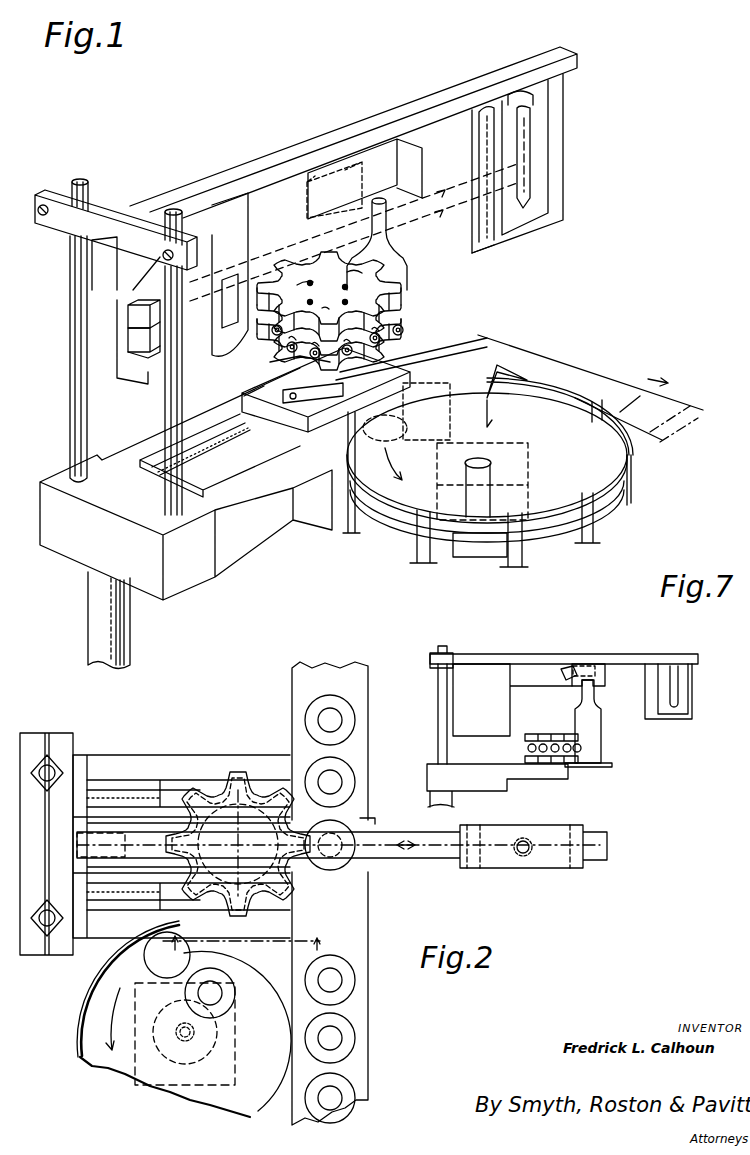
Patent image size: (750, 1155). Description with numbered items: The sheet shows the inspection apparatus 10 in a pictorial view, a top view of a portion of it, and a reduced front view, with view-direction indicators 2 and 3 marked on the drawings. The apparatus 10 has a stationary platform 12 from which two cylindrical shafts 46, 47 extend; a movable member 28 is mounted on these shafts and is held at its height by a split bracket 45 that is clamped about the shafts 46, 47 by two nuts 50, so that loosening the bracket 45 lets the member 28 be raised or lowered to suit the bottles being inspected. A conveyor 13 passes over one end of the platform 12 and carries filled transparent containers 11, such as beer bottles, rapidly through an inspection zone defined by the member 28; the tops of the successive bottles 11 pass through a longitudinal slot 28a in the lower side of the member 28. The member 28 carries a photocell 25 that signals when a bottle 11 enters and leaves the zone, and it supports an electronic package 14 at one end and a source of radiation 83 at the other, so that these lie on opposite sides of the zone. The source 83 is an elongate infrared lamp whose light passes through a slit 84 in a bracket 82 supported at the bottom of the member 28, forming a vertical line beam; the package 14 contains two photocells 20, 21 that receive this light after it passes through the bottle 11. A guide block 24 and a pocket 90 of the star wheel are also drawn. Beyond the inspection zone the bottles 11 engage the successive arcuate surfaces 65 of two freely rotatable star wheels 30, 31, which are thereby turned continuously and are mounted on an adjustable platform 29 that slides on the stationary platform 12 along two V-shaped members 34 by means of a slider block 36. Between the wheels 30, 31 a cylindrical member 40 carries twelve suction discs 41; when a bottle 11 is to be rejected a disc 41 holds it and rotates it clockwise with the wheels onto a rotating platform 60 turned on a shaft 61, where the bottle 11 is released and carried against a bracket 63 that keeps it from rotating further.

In FIG. 1, the inspection apparatus 10 is at (488, 44).
In FIG. 7, the inspection apparatus 10 is at (631, 655).
In FIG. 2, the inspection apparatus 10 is at (272, 709).
In FIG. 1, the transparent containers 11 is at (405, 246).
In FIG. 7, the transparent containers 11 is at (602, 746).
In FIG. 2, the transparent containers 11 is at (352, 768).
In FIG. 1, the stationary platform 12 is at (57, 515).
In FIG. 7, the stationary platform 12 is at (448, 788).
In FIG. 1, the conveyor 13 is at (656, 400).
In FIG. 7, the conveyor 13 is at (610, 766).
In FIG. 2, the conveyor 13 is at (368, 1006).
In FIG. 1, the electronic package 14 is at (125, 384).
In FIG. 7, the electronic package 14 is at (497, 710).
In FIG. 2, the electronic package 14 is at (181, 846).
In FIG. 1, the photocell 20 is at (128, 316).
In FIG. 1, the photocell 21 is at (128, 345).
In FIG. 1, the guide block 24 is at (422, 160).
In FIG. 7, the guide block 24 is at (600, 672).
In FIG. 1, the photocell 25 is at (306, 208).
In FIG. 7, the photocell 25 is at (574, 667).
In FIG. 1, the movable member 28 is at (572, 52).
In FIG. 7, the movable member 28 is at (698, 658).
In FIG. 2, the movable member 28 is at (598, 852).
In FIG. 1, the longitudinal slot 28a is at (426, 204).
In FIG. 7, the longitudinal slot 28a is at (570, 682).
In FIG. 1, the adjustable platform 29 is at (262, 393).
In FIG. 2, the adjustable platform 29 is at (175, 790).
In FIG. 1, the star wheel 30 is at (390, 284).
In FIG. 7, the star wheel 30 is at (540, 734).
In FIG. 2, the star wheel 30 is at (215, 780).
In FIG. 1, the star wheel 31 is at (385, 338).
In FIG. 7, the star wheel 31 is at (525, 759).
In FIG. 2, the star wheel 31 is at (256, 778).
In FIG. 1, the V-shaped members 34 is at (212, 468).
In FIG. 2, the V-shaped members 34 is at (140, 788).
In FIG. 1, the slider block 36 is at (306, 410).
In FIG. 1, the cylindrical member 40 is at (283, 393).
In FIG. 1, the suction discs 41 is at (270, 363).
In FIG. 1, the split bracket 45 is at (68, 222).
In FIG. 2, the split bracket 45 is at (33, 742).
In FIG. 1, the shaft 46 is at (83, 181).
In FIG. 2, the shaft 46 is at (76, 756).
In FIG. 1, the shaft 47 is at (173, 210).
In FIG. 7, the shaft 47 is at (447, 752).
In FIG. 2, the shaft 47 is at (47, 940).
In FIG. 1, the nuts 50 is at (38, 210).
In FIG. 1, the rotating platform 60 is at (593, 458).
In FIG. 2, the rotating platform 60 is at (99, 1040).
In FIG. 1, the shaft 61 is at (505, 493).
In FIG. 2, the shaft 61 is at (178, 1042).
In FIG. 1, the bracket 63 is at (550, 382).
In FIG. 2, the bracket 63 is at (85, 995).
In FIG. 1, the arcuate surfaces 65 is at (410, 347).
In FIG. 1, the bracket 82 is at (563, 176).
In FIG. 7, the bracket 82 is at (652, 716).
In FIG. 1, the source of radiation 83 is at (532, 128).
In FIG. 7, the source of radiation 83 is at (679, 691).
In FIG. 1, the slit 84 is at (462, 246).
In FIG. 1, the star wheel pocket 90 is at (304, 300).
In FIG. 1, the view direction of FIG. 2 is at (362, 86).
In FIG. 2, the section line 3- 3 is at (245, 942).